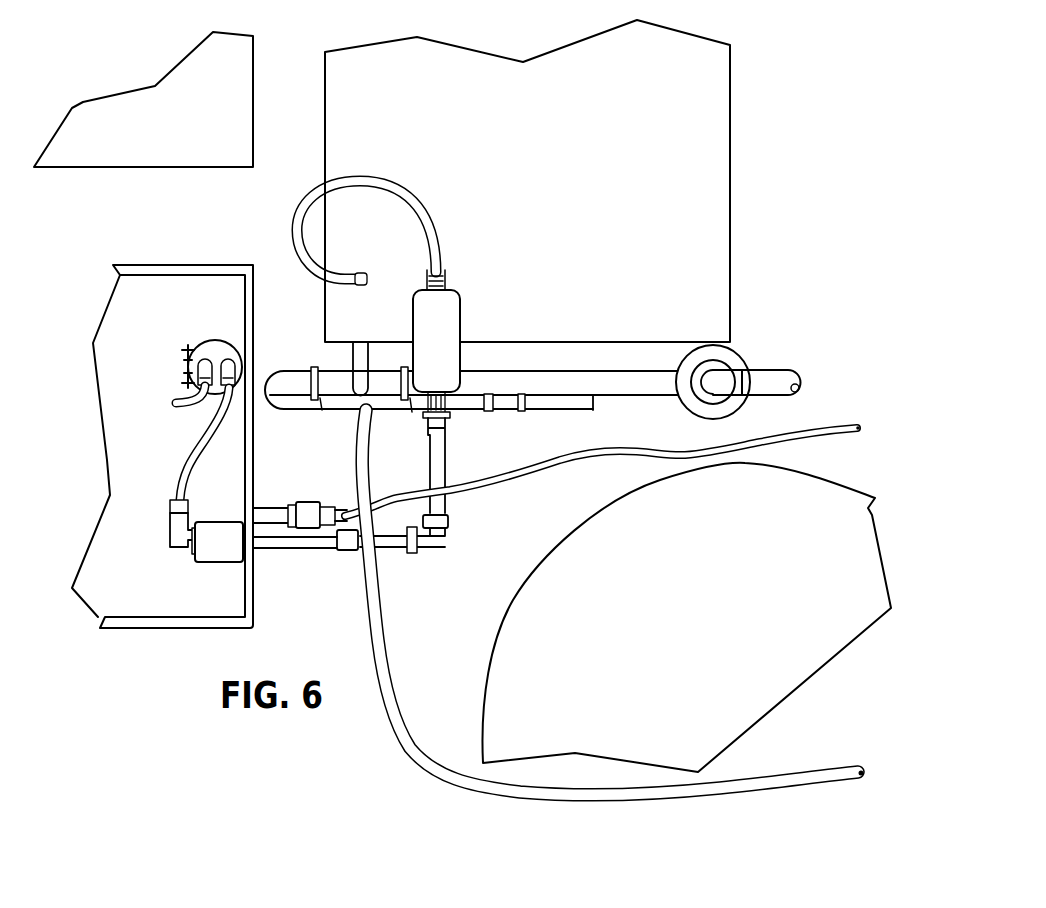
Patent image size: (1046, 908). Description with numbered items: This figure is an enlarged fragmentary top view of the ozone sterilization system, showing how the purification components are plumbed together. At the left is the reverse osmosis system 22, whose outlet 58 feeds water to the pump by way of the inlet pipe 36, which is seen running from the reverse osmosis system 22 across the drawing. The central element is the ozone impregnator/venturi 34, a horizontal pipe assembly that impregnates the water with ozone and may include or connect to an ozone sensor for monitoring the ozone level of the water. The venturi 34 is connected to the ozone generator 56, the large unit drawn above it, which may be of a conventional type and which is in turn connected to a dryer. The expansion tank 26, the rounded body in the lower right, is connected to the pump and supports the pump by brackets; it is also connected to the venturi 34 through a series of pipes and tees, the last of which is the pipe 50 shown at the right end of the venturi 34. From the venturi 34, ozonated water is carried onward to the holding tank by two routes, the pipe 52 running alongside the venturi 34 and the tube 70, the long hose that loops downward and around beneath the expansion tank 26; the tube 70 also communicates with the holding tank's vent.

The reverse osmosis system 22 is at (144, 622).
The expansion tank 26 is at (757, 672).
The ozone impregnator/venturi 34 is at (338, 369).
The inlet pipe 36 is at (471, 490).
The pipe 50 is at (768, 385).
The pipe 52 is at (527, 404).
The ozone generator 56 is at (717, 231).
The outlet 58 is at (217, 550).
The tube 70 is at (372, 680).